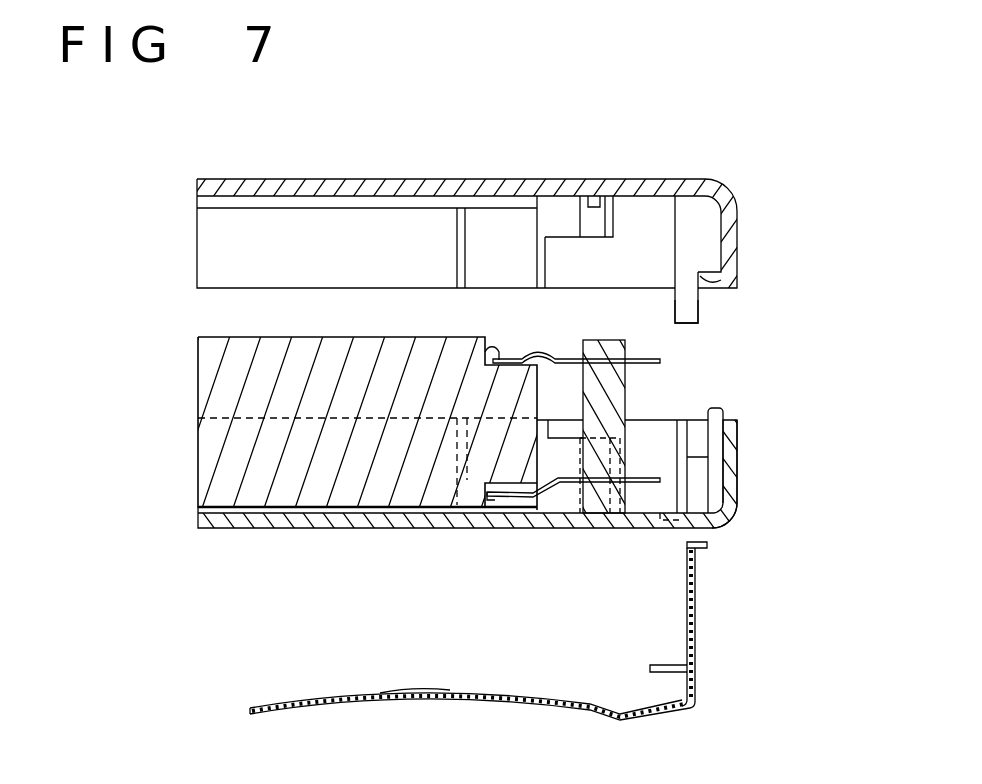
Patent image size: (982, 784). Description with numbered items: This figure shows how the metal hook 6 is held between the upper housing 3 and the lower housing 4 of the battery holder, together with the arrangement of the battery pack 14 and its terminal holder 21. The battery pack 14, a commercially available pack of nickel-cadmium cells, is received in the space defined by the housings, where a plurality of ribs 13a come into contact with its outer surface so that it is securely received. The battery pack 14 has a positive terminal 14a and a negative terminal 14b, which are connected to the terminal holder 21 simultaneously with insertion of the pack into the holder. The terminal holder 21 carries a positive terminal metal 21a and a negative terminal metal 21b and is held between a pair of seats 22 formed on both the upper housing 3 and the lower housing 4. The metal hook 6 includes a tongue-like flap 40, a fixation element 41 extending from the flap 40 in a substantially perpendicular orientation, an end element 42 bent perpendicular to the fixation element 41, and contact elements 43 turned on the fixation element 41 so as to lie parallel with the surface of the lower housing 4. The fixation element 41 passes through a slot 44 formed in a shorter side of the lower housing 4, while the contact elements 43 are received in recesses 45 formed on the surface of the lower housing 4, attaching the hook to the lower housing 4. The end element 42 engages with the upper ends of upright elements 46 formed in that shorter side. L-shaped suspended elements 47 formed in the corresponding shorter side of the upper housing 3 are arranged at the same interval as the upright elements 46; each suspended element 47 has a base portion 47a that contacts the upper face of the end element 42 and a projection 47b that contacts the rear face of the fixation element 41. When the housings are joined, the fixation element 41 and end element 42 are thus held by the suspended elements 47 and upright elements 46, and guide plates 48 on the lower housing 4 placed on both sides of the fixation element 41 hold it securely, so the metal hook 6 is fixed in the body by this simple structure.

The upper housing 3 is at (640, 188).
The lower housing 4 is at (342, 522).
The metal hook 6 is at (487, 702).
The rib 13a is at (457, 208).
The battery pack 14 is at (207, 369).
The positive terminal 14a is at (485, 505).
The negative terminal 14b is at (483, 350).
The terminal holder 21 is at (626, 404).
The positive terminal metal 21a is at (567, 487).
The negative terminal metal 21b is at (552, 354).
The seat 22 is at (562, 207).
The tongue-like flap 40 is at (417, 693).
The fixation element 41 is at (695, 608).
The end element 42 is at (707, 548).
The contact element 43 is at (657, 665).
The slot 44 is at (713, 528).
The recess 45 is at (665, 528).
The upright element 46 is at (715, 442).
The suspended element 47 is at (707, 242).
The base portion 47a is at (727, 278).
The projection 47b is at (700, 298).
The guide plate 48 is at (697, 483).